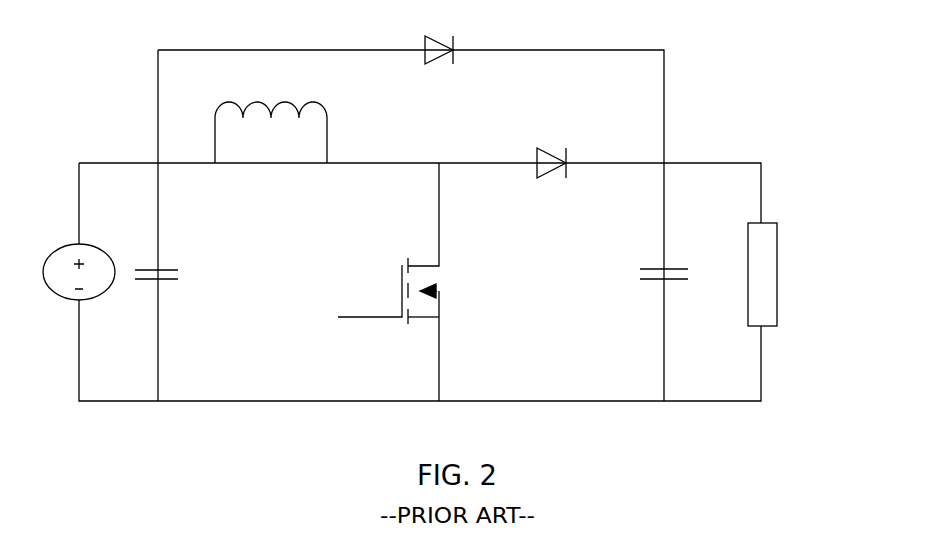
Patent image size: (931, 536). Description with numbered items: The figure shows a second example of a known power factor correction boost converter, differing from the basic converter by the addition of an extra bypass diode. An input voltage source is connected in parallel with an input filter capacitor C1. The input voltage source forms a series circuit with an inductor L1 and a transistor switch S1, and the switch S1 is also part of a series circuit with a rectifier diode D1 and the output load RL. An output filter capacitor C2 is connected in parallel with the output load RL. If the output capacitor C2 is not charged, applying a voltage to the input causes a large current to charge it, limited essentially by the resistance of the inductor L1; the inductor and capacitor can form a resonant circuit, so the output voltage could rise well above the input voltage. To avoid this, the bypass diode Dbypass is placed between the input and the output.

The inductor L1 is at (271, 117).
The bypass diode Dbypass is at (477, 71).
The diode D1 is at (552, 178).
The transistor switch S1 is at (388, 282).
The input filter capacitor C1 is at (177, 277).
The output filter capacitor C2 is at (683, 275).
The output load RL is at (787, 274).